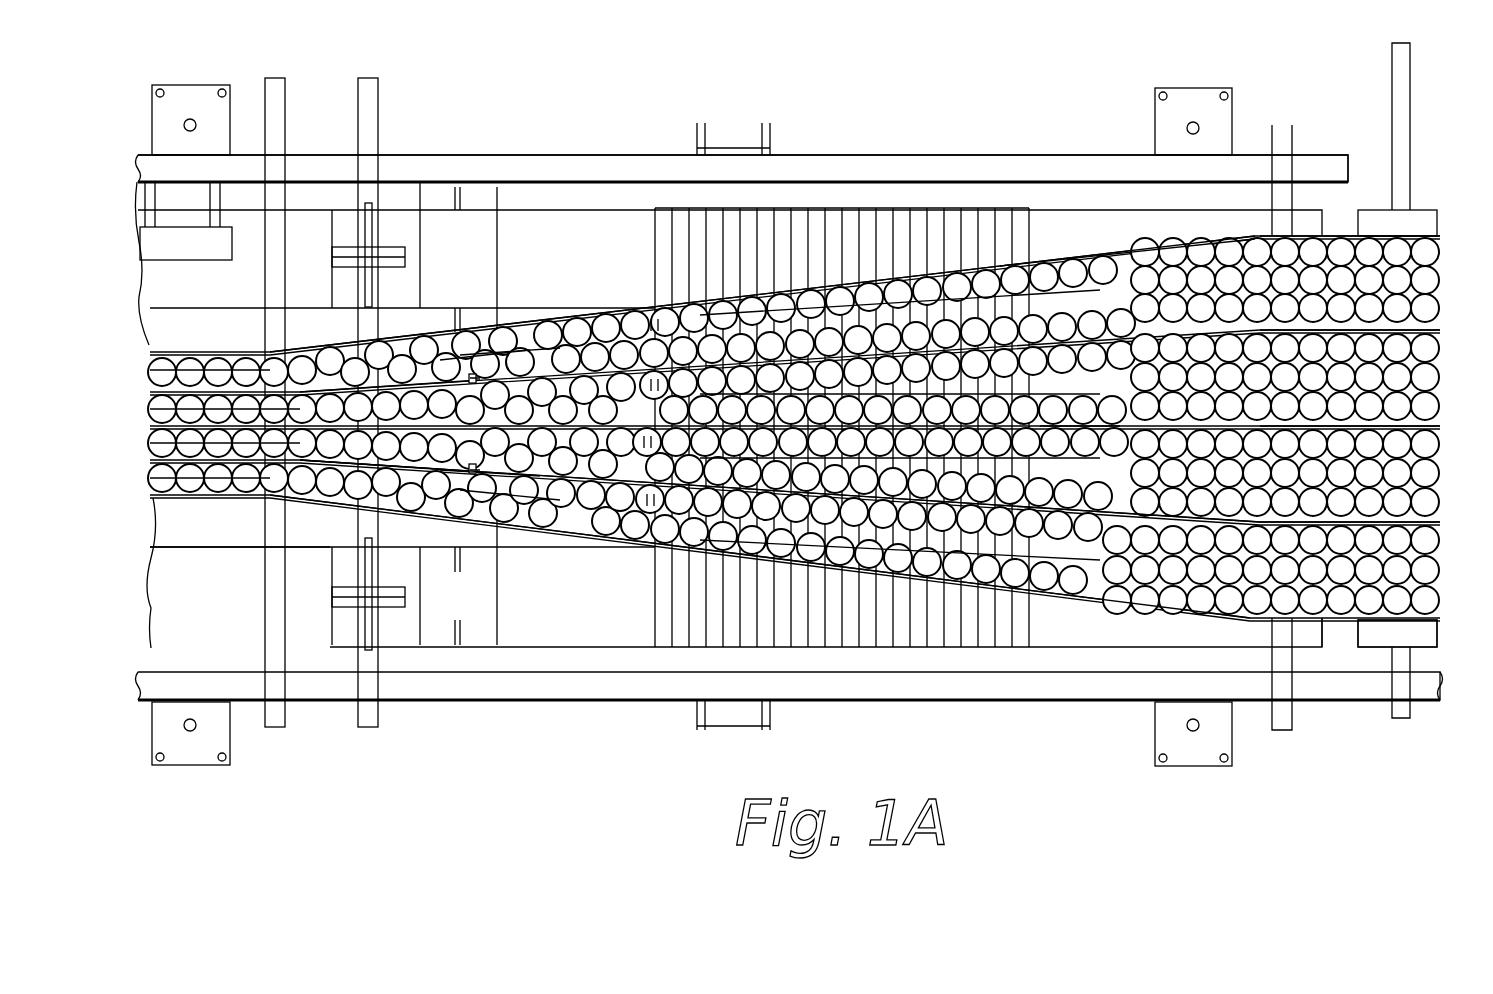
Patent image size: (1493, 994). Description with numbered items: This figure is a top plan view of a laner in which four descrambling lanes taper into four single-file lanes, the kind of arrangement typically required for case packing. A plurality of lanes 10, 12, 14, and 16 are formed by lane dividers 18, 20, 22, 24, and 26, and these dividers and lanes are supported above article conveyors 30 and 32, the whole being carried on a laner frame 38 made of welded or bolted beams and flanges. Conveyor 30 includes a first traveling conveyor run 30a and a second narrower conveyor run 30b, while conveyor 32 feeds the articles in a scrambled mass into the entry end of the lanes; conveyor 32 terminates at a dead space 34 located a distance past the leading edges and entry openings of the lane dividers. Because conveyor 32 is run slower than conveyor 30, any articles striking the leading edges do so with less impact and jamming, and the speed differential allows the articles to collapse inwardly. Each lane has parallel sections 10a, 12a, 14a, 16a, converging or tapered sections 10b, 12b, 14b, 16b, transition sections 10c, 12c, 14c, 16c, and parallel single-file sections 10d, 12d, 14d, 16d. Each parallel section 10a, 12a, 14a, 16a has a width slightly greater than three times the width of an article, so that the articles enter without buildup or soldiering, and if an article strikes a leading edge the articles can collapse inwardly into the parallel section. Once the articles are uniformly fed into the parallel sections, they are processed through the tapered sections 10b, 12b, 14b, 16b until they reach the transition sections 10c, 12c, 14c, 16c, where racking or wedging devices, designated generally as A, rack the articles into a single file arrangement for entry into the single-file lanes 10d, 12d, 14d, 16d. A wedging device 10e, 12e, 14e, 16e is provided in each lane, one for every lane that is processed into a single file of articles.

The lane 10 is at (1485, 296).
The lane 12 is at (1482, 392).
The lane 14 is at (1482, 492).
The lane 16 is at (1482, 587).
The parallel section 10a is at (1352, 296).
The converging or tapered section 10b is at (1002, 316).
The transition section 10c is at (482, 351).
The parallel, single file section 10d is at (170, 352).
The wedging device 10e is at (482, 371).
The parallel section 12a is at (1338, 391).
The converging or tapered section 12b is at (1002, 391).
The transition section 12c is at (423, 385).
The parallel, single file section 12d is at (243, 378).
The wedging device 12e is at (472, 357).
The parallel section 14a is at (1338, 491).
The converging or tapered section 14b is at (1008, 469).
The transition section 14c is at (375, 500).
The parallel, single file section 14d is at (156, 487).
The wedging device 14e is at (453, 479).
The parallel section 16a is at (1338, 586).
The converging or tapered section 16b is at (1002, 554).
The transition section 16c is at (470, 501).
The parallel, single file section 16d is at (245, 493).
The wedging device 16e is at (482, 481).
The lane divider 18 is at (1069, 264).
The lane divider 20 is at (1084, 268).
The lane divider 22 is at (1074, 480).
The lane divider 24 is at (1083, 510).
The lane divider 26 is at (1138, 602).
The article conveyor 30 is at (870, 212).
The first traveling conveyor run 30a is at (943, 208).
The second narrower conveyor run 30b is at (232, 548).
The article conveyor 32 is at (1368, 208).
The dead space 34 is at (1338, 633).
The laner frame 38 is at (600, 155).
The racking or wedging devices A is at (480, 376).